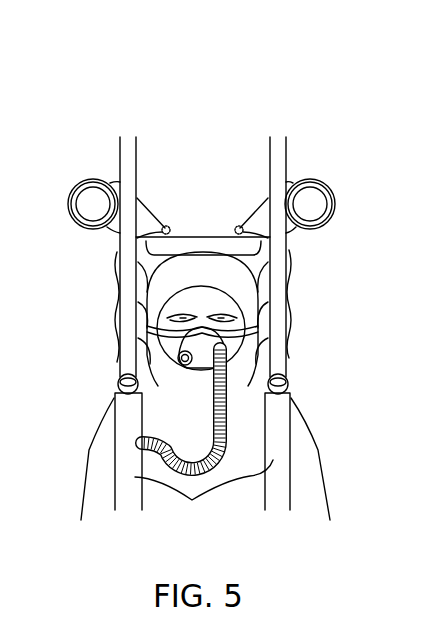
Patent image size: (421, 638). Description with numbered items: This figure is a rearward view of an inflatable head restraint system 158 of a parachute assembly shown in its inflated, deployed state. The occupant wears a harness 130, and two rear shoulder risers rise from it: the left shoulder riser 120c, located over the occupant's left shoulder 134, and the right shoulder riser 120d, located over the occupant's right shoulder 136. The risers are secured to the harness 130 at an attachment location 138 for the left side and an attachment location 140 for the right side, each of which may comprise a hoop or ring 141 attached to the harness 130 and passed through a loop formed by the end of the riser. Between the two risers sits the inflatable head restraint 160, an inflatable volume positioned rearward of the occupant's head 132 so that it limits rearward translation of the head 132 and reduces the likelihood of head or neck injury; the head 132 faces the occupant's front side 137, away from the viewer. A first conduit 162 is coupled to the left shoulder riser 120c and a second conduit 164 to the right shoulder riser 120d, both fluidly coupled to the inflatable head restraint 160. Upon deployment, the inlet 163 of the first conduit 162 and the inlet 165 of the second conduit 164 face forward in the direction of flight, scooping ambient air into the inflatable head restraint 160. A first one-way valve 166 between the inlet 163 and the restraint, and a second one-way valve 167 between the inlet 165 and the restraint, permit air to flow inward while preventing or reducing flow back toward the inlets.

The inflatable head restraint system 158 is at (212, 123).
The right shoulder riser 120d is at (127, 150).
The left shoulder riser 120c is at (279, 154).
The inlet of second conduit 165 is at (85, 199).
The inlet of first conduit 163 is at (321, 196).
The second conduit 164 is at (140, 200).
The first conduit 162 is at (266, 200).
The second one-way valve 167 is at (168, 225).
The first one-way valve 166 is at (238, 225).
The inflatable head restraint 160 is at (206, 252).
The head 132 is at (189, 283).
The front side 137 is at (181, 450).
The ring 141 is at (116, 382).
The attachment location 140 is at (114, 396).
The attachment location 138 is at (291, 400).
The right shoulder 136 is at (110, 421).
The left shoulder 134 is at (297, 426).
The harness 130 is at (192, 500).